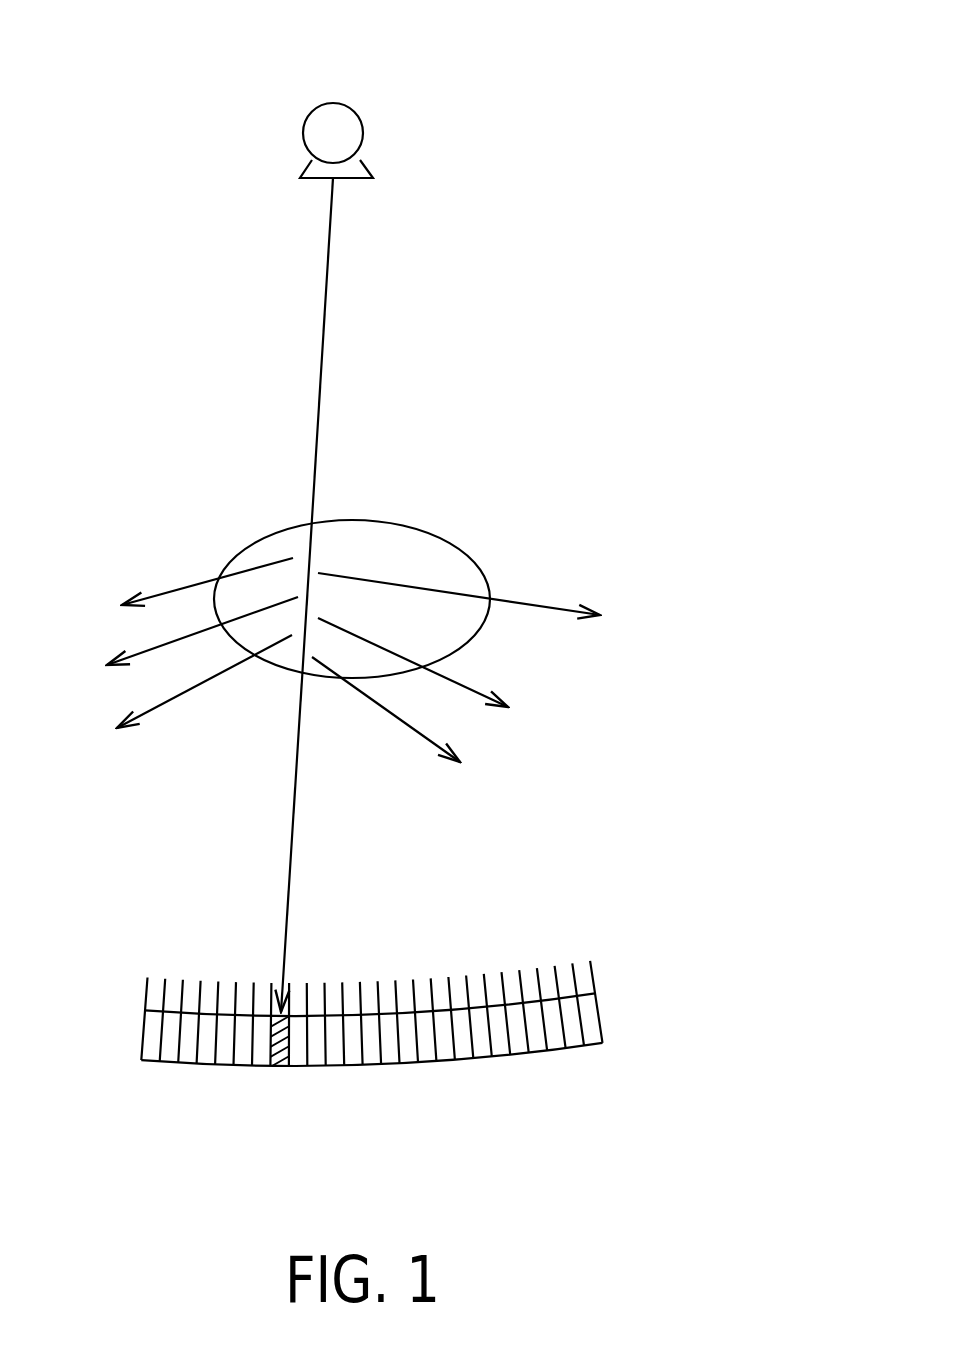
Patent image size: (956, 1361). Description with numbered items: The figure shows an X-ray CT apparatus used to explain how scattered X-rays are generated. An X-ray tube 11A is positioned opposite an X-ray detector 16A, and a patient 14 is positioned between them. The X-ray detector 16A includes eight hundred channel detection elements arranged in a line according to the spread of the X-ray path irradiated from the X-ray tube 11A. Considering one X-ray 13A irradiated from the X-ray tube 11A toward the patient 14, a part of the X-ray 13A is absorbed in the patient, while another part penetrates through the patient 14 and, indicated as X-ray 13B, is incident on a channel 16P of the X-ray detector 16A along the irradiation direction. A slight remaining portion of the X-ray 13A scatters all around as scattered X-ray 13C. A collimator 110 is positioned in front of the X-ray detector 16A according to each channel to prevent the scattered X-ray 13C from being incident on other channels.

The X-ray tube 11A is at (353, 108).
The X-ray 13A is at (322, 355).
The penetrated X-ray 13B is at (292, 860).
The scattered X-ray 13C is at (167, 588).
The patient 14 is at (480, 562).
The collimator 110 is at (416, 1025).
The X-ray detector 16A is at (553, 1047).
The channel 16P is at (273, 1067).